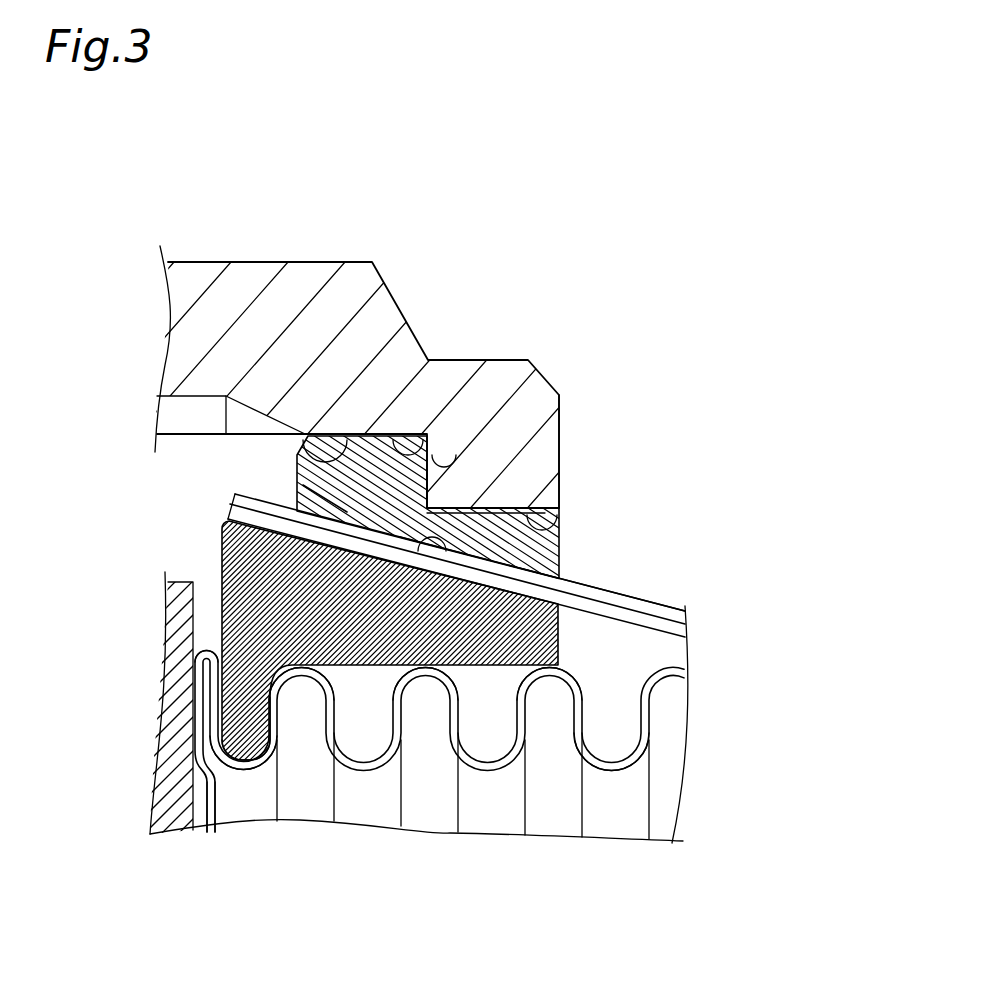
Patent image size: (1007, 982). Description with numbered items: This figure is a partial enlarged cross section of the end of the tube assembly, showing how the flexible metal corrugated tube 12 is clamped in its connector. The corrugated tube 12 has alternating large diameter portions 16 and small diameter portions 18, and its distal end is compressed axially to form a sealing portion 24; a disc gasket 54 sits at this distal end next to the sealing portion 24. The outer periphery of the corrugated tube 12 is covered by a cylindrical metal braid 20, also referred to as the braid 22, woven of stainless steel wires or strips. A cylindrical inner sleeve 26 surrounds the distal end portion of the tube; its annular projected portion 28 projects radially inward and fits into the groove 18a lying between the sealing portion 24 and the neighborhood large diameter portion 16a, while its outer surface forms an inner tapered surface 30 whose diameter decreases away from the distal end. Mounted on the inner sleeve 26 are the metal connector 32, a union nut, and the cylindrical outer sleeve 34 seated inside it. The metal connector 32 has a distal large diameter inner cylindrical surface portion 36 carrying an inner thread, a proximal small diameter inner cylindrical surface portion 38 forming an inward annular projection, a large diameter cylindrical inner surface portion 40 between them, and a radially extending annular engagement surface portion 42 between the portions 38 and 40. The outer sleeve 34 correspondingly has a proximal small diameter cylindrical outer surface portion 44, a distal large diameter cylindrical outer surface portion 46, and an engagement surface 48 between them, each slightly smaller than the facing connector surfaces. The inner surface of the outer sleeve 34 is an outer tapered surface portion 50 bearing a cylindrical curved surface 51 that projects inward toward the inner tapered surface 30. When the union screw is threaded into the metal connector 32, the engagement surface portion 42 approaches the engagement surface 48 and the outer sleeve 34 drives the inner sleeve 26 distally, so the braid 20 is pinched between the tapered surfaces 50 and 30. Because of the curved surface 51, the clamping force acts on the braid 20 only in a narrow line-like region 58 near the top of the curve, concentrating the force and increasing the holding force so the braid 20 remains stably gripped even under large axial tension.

The corrugated tube 12 is at (668, 757).
The large diameter portion 16 is at (550, 682).
The neighborhood large diameter portion 16a is at (302, 680).
The small diameter portion 18 is at (608, 773).
The small diameter portion 18a is at (243, 773).
The braid 20 is at (659, 607).
The braid 22 is at (211, 806).
The sealing portion 24 is at (205, 651).
The inner sleeve 26 is at (223, 542).
The annular projected portion 28 is at (242, 718).
The inner tapered surface 30 is at (565, 592).
The metal connector 32 is at (203, 263).
The outer sleeve 34 is at (297, 458).
The distal large diameter inner cylindrical surface portion 36 is at (186, 414).
The proximal small diameter inner cylindrical surface portion 38 is at (560, 440).
The large diameter cylindrical inner surface portion 40 is at (337, 437).
The annular engagement surface portion 42 is at (432, 472).
The proximal small diameter cylindrical outer surface portion 44 is at (559, 522).
The distal large diameter cylindrical outer surface portion 46 is at (307, 437).
The engagement surface 48 is at (390, 437).
The outer tapered surface portion 50 is at (460, 560).
The curved surface 51 is at (490, 576).
The disc gasket 54 is at (167, 796).
The line-like region 58 is at (422, 682).